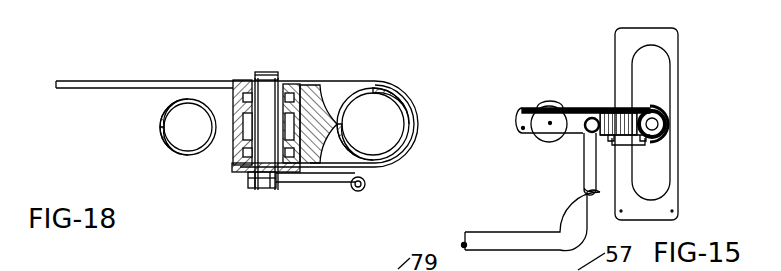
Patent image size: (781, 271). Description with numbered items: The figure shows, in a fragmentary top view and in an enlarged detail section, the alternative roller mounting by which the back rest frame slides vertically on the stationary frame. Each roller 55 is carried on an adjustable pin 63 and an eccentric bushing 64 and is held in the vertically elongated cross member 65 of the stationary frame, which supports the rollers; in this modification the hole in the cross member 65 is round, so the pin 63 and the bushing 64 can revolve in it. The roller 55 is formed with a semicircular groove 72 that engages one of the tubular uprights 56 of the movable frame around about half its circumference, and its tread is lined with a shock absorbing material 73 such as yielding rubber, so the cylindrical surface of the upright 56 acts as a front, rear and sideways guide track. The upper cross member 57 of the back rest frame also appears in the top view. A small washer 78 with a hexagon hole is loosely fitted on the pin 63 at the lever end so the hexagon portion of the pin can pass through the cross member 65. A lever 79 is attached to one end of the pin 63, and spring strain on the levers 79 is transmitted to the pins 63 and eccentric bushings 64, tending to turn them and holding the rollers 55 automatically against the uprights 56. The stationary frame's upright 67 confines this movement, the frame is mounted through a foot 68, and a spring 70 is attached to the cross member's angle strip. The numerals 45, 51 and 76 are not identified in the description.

In FIG. 18, the ball 45 is at (353, 190).
In FIG. 15, the handle 51 is at (478, 237).
In FIG. 18, the roller 55 is at (313, 122).
In FIG. 18, the tubular upright 56 is at (175, 128).
In FIG. 15, the tubular upright 56 is at (578, 133).
In FIG. 15, the upper cross member 57 is at (537, 127).
In FIG. 18, the adjustable pin 63 is at (283, 80).
In FIG. 15, the adjustable pin 63 is at (614, 109).
In FIG. 18, the eccentric bushing 64 is at (328, 88).
In FIG. 18, the upper vertically elongated cross member 65 is at (110, 83).
In FIG. 18, the upright 67 is at (389, 113).
In FIG. 15, the upright 67 is at (664, 118).
In FIG. 15, the foot 68 is at (662, 76).
In FIG. 15, the spring 70 is at (553, 102).
In FIG. 18, the semicircular groove 72 is at (220, 106).
In FIG. 18, the shock absorbing material 73 is at (366, 91).
In FIG. 18, the nut 76 is at (266, 72).
In FIG. 18, the small washer 78 is at (253, 173).
In FIG. 18, the lever 79 is at (320, 182).
In FIG. 15, the lever 79 is at (640, 143).